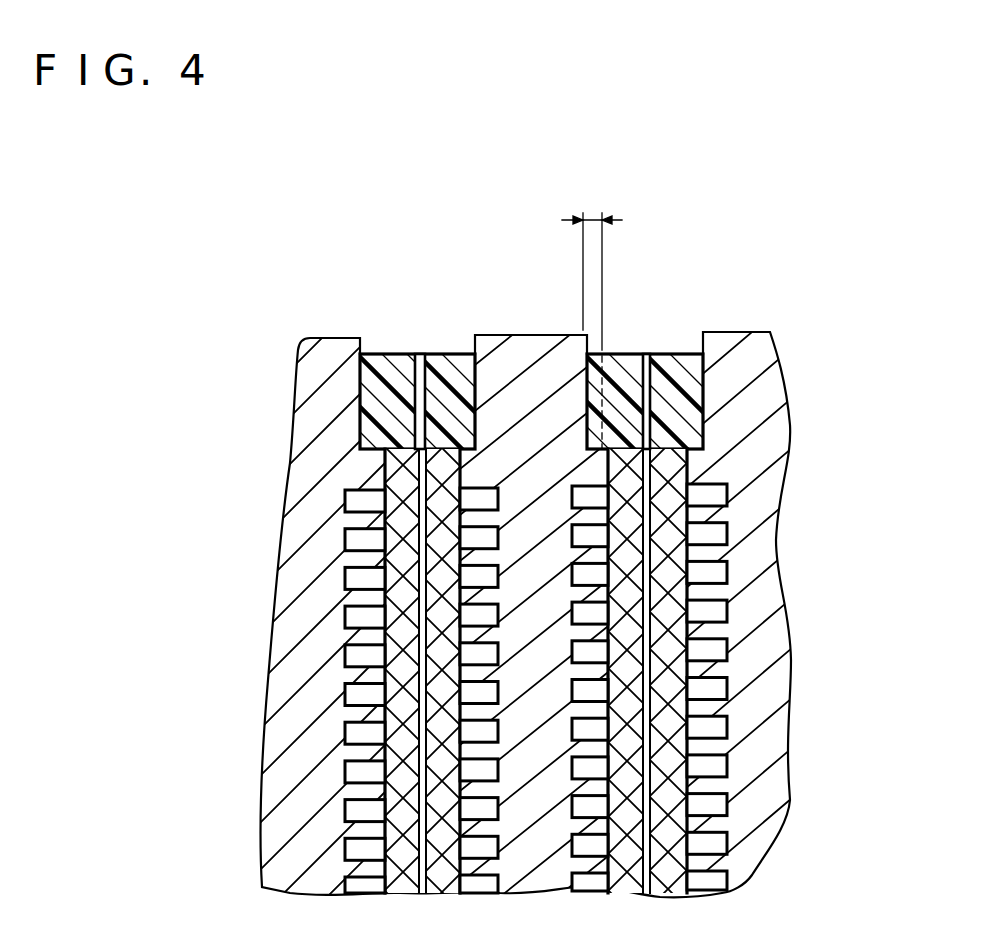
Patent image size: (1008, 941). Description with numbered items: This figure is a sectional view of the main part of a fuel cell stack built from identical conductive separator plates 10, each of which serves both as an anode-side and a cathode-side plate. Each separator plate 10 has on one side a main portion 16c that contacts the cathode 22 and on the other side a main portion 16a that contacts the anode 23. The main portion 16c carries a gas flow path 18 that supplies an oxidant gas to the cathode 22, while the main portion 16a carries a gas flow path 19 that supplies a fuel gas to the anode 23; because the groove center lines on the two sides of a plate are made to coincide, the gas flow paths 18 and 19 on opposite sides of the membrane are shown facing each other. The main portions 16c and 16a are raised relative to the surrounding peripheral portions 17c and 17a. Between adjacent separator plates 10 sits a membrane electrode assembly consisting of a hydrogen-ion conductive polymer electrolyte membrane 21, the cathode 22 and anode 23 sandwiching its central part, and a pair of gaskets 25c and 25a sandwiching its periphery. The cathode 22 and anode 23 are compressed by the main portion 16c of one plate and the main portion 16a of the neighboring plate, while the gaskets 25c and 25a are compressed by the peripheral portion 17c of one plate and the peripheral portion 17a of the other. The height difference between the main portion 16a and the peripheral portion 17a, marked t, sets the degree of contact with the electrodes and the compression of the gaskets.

The separator plate 10 is at (322, 367).
The main portion 16a is at (383, 465).
The main portion 16c is at (385, 503).
The peripheral portion 17a is at (590, 342).
The peripheral portion 17c is at (467, 343).
The gas flow path 18 is at (480, 695).
The gas flow path 19 is at (357, 582).
The polymer electrolyte membrane 21 is at (420, 352).
The cathode 22 is at (455, 780).
The anode 23 is at (410, 623).
The gasket 25a is at (388, 370).
The gasket 25c is at (445, 365).